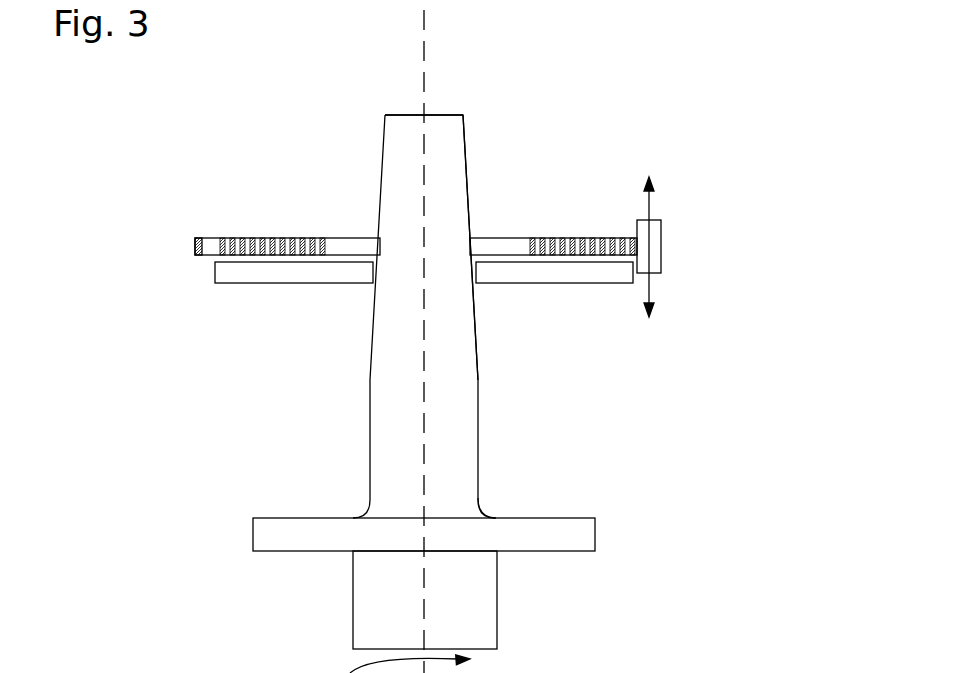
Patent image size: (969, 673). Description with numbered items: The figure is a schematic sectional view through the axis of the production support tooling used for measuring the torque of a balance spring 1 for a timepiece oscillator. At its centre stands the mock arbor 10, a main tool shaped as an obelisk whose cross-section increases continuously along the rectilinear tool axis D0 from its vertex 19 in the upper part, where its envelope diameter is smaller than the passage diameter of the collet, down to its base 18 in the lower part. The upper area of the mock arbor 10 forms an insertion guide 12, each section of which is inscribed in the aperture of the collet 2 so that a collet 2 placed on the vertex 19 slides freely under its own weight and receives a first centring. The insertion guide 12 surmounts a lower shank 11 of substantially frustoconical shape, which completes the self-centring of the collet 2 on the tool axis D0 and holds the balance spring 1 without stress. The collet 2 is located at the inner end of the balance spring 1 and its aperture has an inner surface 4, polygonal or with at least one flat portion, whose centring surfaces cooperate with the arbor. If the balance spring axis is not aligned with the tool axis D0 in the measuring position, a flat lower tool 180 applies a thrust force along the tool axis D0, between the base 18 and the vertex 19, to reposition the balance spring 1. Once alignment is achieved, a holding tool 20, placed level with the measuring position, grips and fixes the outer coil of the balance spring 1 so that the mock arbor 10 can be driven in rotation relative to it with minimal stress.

The tool axis D0 is at (438, 27).
The vertex 19 is at (402, 100).
The insertion guide 12 is at (478, 132).
The lower shank 11 is at (492, 373).
The mock arbor 10 is at (395, 478).
The base 18 is at (496, 507).
The inner surface 4 is at (331, 234).
The collet 2 is at (532, 238).
The balance spring 1 is at (602, 238).
The holding tool 20 is at (663, 247).
The flat lower tool 180 is at (296, 274).